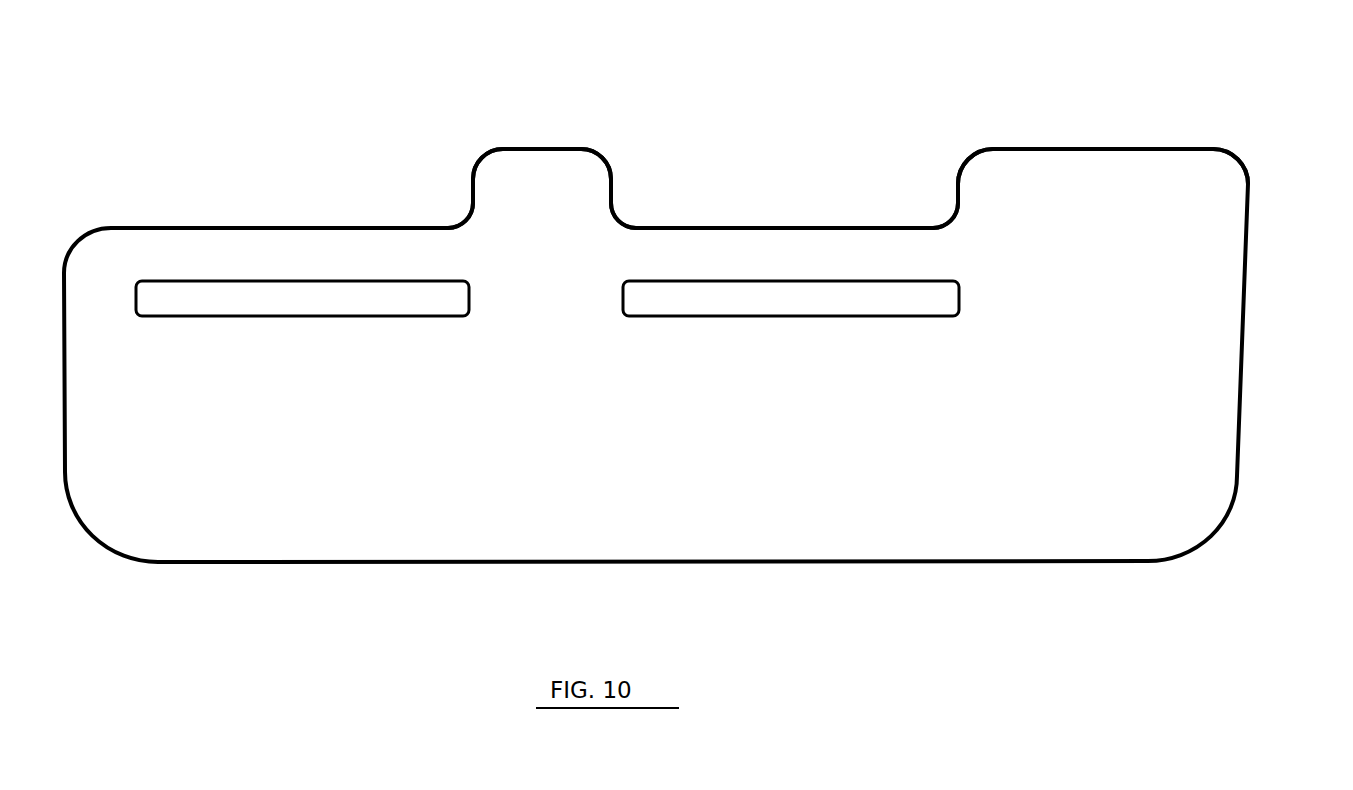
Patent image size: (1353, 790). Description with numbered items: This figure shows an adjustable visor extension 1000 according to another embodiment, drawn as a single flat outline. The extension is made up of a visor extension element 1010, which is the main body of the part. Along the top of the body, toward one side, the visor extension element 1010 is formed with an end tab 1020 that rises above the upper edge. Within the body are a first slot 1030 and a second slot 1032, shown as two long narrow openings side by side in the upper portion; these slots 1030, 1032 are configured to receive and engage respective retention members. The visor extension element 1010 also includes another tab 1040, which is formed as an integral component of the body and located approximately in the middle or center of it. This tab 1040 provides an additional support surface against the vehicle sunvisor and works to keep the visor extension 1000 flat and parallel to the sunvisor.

The adjustable visor extension 1000 is at (853, 63).
The visor extension element 1010 is at (750, 220).
The end tab 1020 is at (1243, 164).
The first slot 1030 is at (462, 278).
The second slot 1032 is at (952, 279).
The tab 1040 is at (478, 170).